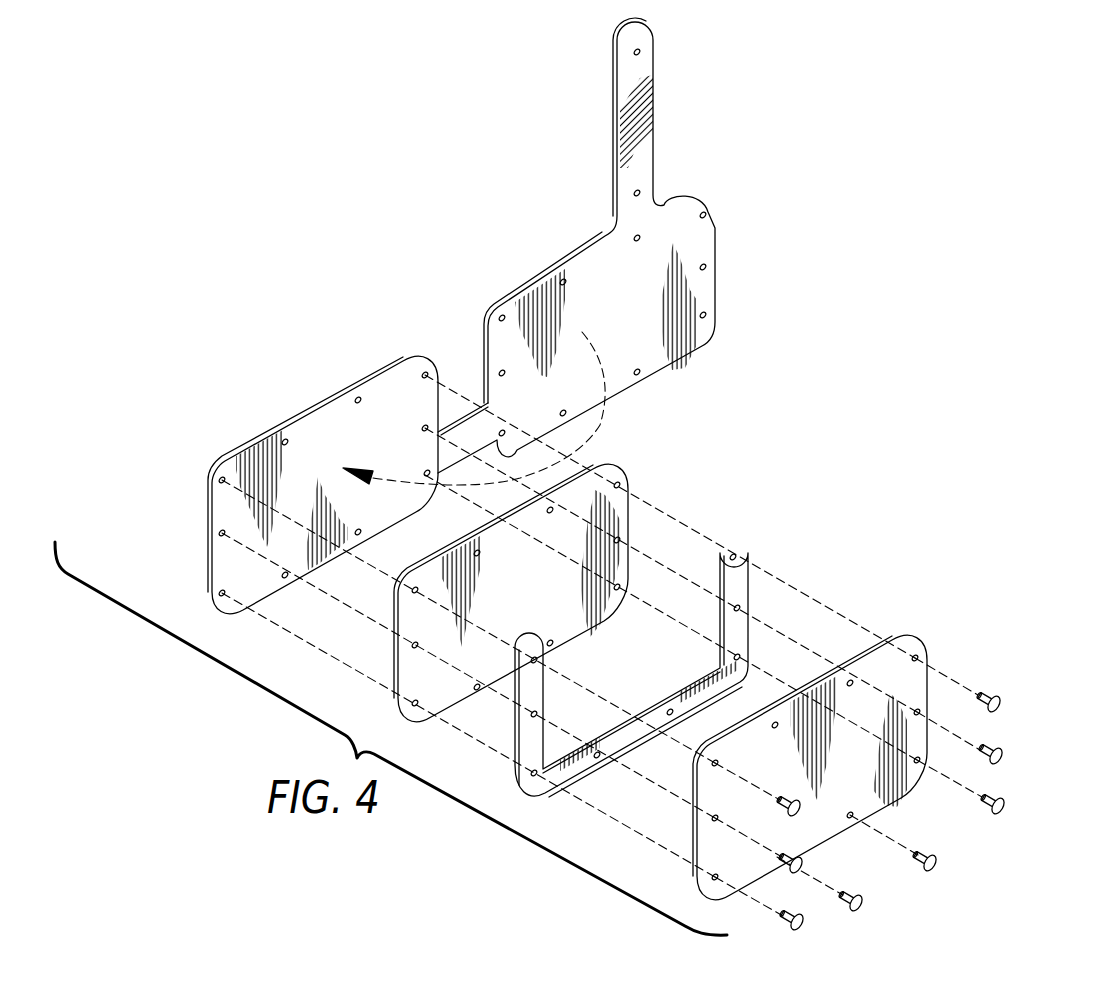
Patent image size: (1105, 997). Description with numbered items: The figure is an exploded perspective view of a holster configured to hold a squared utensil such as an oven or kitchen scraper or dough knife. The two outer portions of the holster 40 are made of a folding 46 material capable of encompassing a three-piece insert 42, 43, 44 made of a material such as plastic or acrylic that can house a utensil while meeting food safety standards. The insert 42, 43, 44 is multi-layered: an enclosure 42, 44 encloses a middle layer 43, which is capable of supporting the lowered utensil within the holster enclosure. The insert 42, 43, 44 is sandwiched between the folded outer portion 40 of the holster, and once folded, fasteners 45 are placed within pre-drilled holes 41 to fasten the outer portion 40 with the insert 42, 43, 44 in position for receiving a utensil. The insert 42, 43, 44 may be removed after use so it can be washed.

The holster outer portion 40 is at (673, 237).
The holes 41 is at (705, 315).
The insert enclosure layer 42 is at (573, 520).
The middle layer 43 is at (740, 580).
The insert enclosure layer 44 is at (877, 675).
The fasteners 45 is at (1005, 810).
The folding material 46 is at (475, 487).